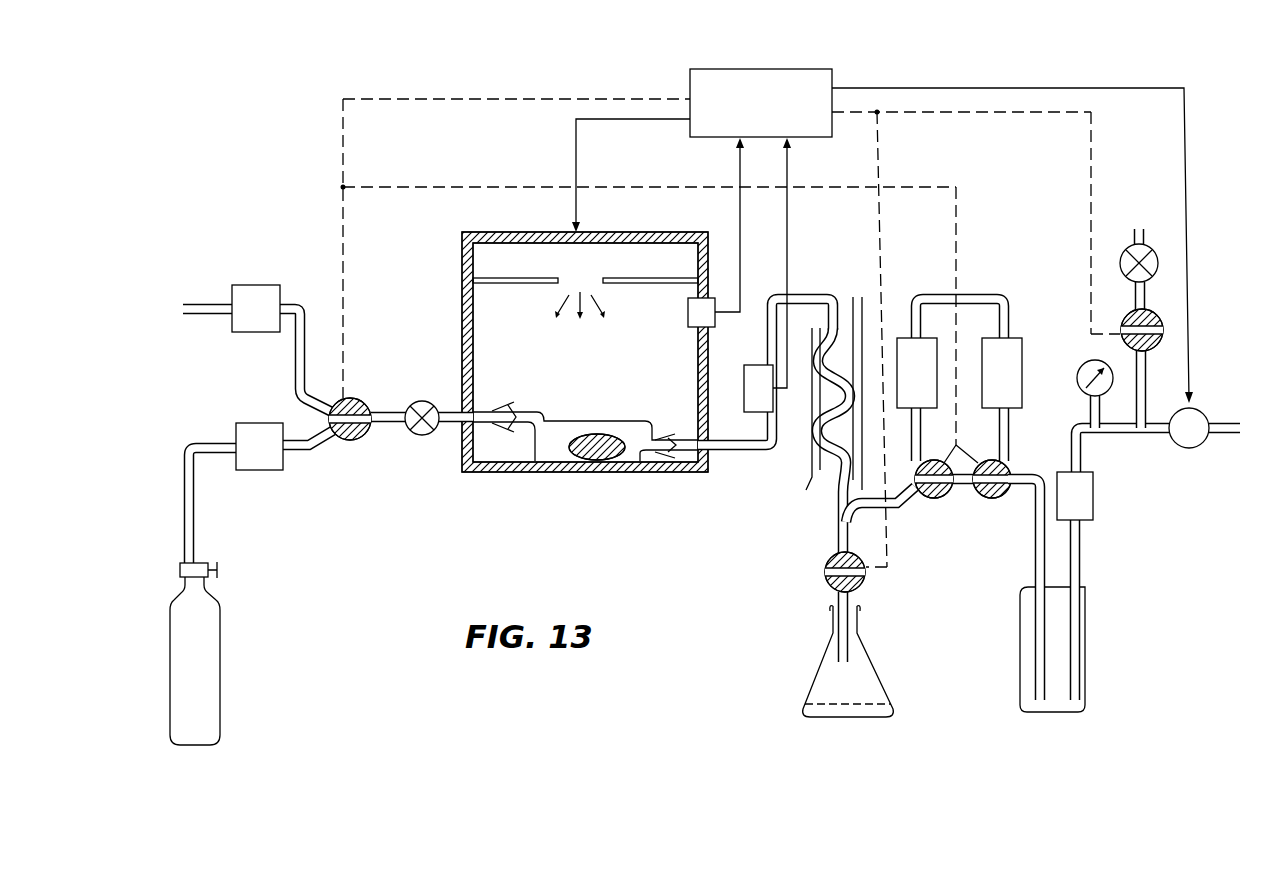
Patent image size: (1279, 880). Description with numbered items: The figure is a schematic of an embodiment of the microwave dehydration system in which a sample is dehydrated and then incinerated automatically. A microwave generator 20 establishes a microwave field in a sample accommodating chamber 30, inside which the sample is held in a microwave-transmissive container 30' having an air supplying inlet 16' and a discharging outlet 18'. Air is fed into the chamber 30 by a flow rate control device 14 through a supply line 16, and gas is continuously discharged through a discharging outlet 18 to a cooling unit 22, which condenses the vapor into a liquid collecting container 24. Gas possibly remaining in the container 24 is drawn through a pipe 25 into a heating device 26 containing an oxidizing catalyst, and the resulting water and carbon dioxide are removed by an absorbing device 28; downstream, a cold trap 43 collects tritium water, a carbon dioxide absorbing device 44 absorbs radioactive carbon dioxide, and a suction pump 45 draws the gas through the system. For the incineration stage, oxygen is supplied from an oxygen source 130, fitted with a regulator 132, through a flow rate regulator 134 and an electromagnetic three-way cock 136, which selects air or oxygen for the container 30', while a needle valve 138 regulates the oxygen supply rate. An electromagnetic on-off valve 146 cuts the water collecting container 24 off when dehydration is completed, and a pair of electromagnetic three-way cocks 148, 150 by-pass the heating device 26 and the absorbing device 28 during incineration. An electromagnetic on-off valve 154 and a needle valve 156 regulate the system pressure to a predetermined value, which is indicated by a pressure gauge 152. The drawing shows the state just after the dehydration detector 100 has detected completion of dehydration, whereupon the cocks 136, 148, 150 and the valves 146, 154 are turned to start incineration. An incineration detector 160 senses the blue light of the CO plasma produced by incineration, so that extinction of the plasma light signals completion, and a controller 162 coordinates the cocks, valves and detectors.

The flow rate control device 14 is at (256, 285).
The air supplying line 16 is at (422, 389).
The air supplying inlet 16' is at (585, 411).
The discharging outlet 18 is at (765, 399).
The discharging outlet of container 18' is at (668, 421).
The microwave generator 20 is at (594, 272).
The cooling unit 22 is at (803, 425).
The liquid collecting container 24 is at (885, 668).
The pipe 25 is at (868, 503).
The heating device 26 is at (908, 318).
The absorbing device 28 is at (1020, 338).
The sample accommodating chamber 30 is at (585, 352).
The container 30' is at (604, 421).
The cold trap 43 is at (1086, 628).
The carbon dioxide absorbing device 44 is at (1096, 540).
The suction pump 45 is at (1190, 450).
The dehydration detector 100 is at (748, 400).
The oxygen source 130 is at (222, 612).
The regulator valve 132 is at (210, 562).
The flow rate regulator 134 is at (266, 423).
The electromagnetic three-way cock 136 is at (351, 441).
The needle valve 138 is at (421, 437).
The electromagnetic on-off valve 146 is at (864, 582).
The electromagnetic three-way cock 148 is at (930, 497).
The electromagnetic three-way cock 150 is at (990, 498).
The pressure gauge 152 is at (1078, 372).
The electromagnetic on-off valve 154 is at (1122, 320).
The needle valve 156 is at (1125, 248).
The incineration detector 160 is at (714, 322).
The controller 162 is at (832, 78).